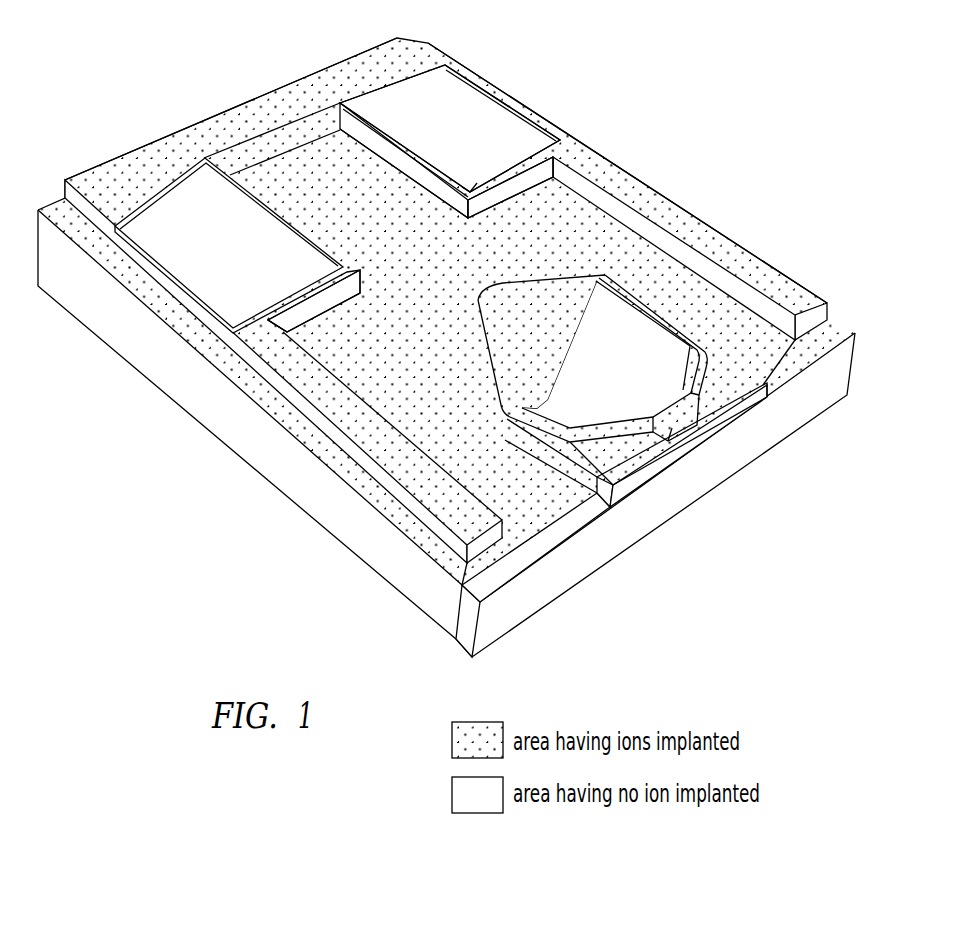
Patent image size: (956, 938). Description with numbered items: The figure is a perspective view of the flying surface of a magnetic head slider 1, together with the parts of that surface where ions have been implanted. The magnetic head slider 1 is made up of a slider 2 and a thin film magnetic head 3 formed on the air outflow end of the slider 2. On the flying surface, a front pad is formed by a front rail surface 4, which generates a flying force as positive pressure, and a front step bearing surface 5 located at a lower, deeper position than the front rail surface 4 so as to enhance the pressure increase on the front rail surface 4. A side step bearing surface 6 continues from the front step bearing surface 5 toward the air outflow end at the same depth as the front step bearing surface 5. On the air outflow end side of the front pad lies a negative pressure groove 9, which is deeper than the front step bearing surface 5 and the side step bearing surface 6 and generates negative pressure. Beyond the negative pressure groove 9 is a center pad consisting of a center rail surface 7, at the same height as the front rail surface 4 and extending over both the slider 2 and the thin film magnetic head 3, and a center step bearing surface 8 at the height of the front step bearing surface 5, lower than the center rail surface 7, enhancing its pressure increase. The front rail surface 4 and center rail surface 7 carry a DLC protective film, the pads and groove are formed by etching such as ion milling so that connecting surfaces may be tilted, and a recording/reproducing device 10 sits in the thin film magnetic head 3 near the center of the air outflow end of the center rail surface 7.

The magnetic head slider 1 is at (216, 83).
The slider 2 is at (155, 372).
The thin film magnetic head 3 is at (462, 640).
The front rail surface 4 is at (478, 107).
The front step bearing surface 5 is at (365, 73).
The side step bearing surface 6 is at (585, 160).
The center rail surface 7 is at (626, 383).
The center step bearing surface 8 is at (535, 335).
The negative pressure groove 9 is at (430, 265).
The recording/reproducing device 10 is at (675, 415).